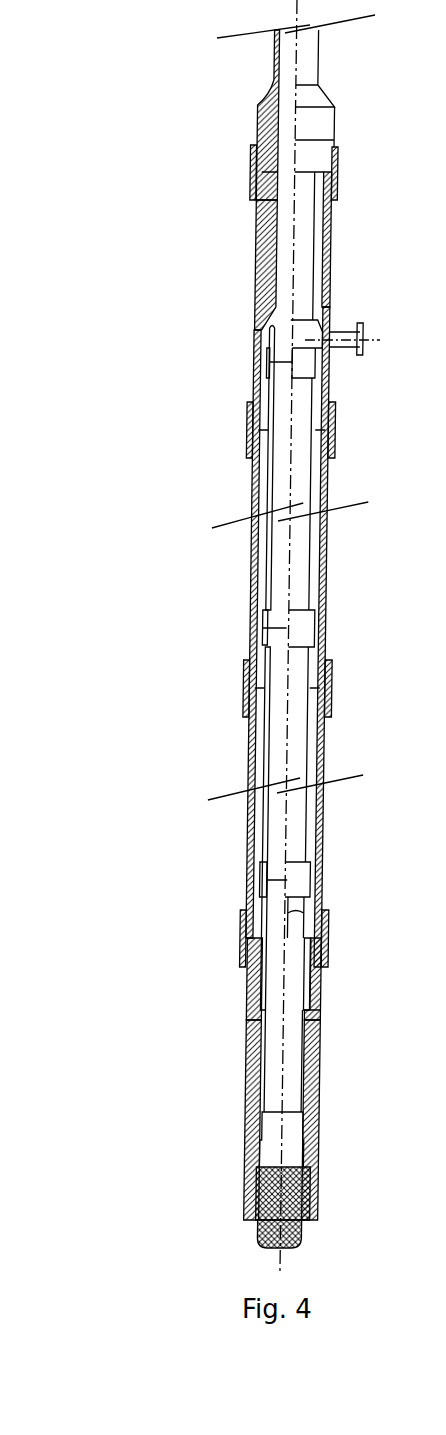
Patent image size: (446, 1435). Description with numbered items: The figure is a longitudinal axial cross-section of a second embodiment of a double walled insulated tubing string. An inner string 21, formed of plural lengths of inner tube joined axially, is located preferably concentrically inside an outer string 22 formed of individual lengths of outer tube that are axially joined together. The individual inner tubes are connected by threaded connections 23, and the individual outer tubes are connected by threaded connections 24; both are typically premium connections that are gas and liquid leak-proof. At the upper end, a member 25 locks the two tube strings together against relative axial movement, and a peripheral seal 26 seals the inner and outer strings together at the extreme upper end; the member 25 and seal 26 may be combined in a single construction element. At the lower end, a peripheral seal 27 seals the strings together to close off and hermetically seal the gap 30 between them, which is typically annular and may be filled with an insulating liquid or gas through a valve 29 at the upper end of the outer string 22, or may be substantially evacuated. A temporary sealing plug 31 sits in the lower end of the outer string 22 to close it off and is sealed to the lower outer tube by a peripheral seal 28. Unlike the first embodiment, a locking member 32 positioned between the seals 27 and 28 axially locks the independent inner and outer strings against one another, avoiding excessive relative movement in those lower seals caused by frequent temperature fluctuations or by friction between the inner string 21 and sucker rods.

The inner string 21 is at (267, 570).
The outer string 22 is at (247, 813).
The threaded connections 23 is at (252, 627).
The threaded connections 24 is at (243, 705).
The axial motion prevention member 25 is at (258, 118).
The peripheral seal 26 is at (258, 245).
The peripheral seal 27 is at (247, 990).
The peripheral seal 28 is at (247, 1180).
The valve 29 is at (318, 332).
The gap 30 is at (265, 488).
The temporary sealing plug 31 is at (258, 1233).
The locking member 32 is at (247, 1056).